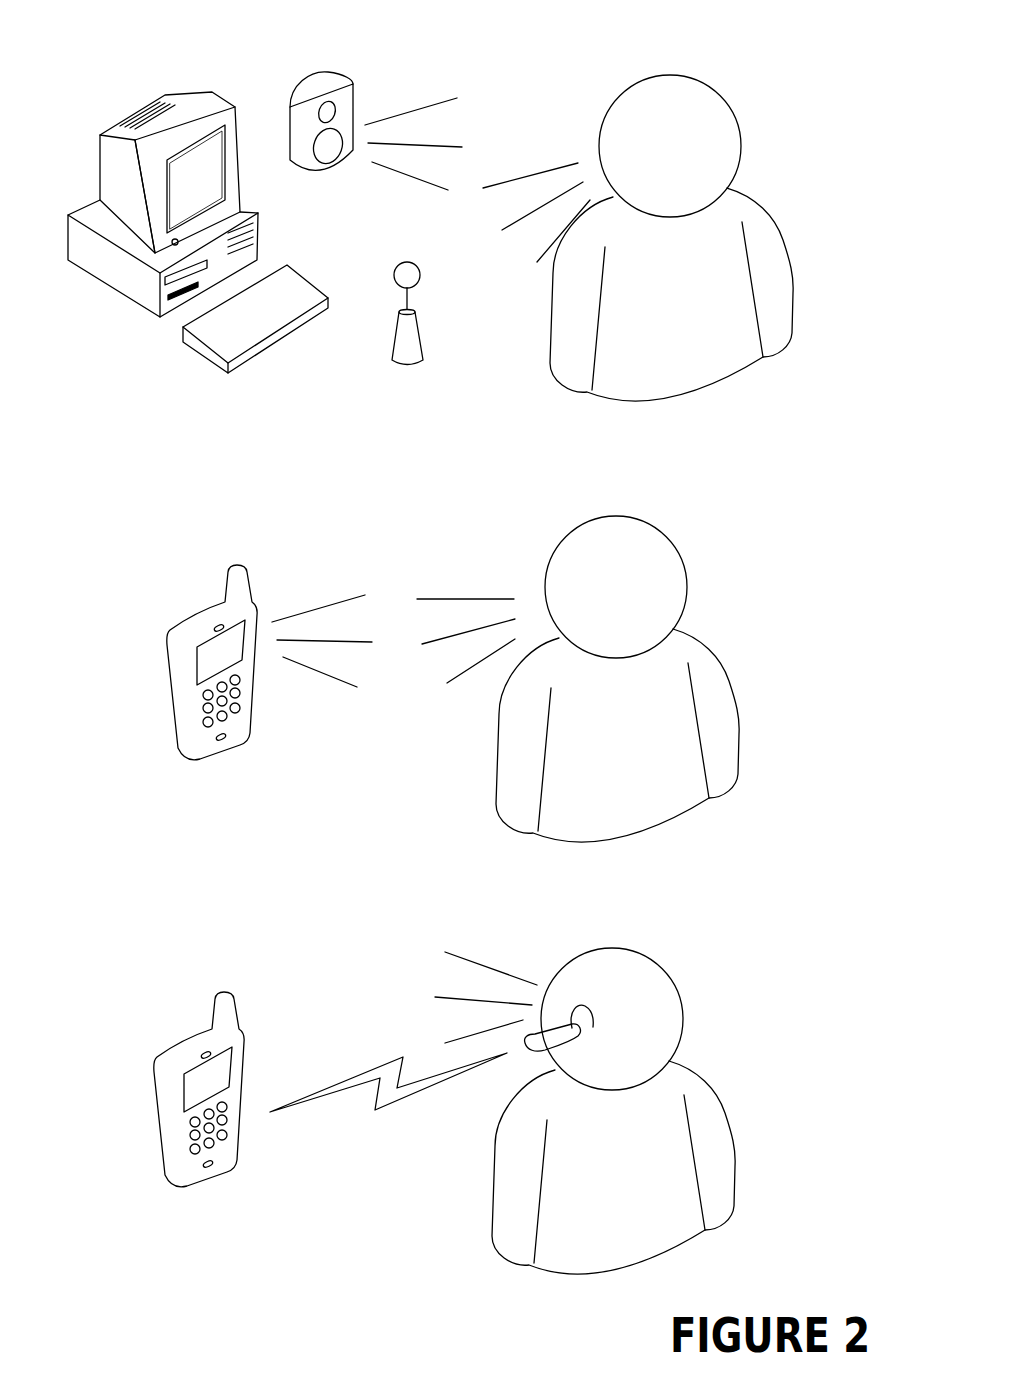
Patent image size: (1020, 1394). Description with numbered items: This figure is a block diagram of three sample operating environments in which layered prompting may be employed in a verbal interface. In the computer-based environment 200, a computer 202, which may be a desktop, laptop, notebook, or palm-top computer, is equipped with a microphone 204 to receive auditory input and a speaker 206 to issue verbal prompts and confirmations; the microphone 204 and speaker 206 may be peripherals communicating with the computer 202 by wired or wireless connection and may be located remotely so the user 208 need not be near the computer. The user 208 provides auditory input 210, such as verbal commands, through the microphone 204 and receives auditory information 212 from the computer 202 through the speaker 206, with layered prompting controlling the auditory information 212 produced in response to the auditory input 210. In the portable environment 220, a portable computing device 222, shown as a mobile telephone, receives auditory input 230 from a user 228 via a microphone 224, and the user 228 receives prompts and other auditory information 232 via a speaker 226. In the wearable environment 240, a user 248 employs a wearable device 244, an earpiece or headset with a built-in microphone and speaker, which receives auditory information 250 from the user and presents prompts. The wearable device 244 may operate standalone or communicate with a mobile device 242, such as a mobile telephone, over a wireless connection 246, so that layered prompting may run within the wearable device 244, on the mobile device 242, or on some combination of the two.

The computer-based environment 200 is at (778, 106).
The computer 202 is at (113, 124).
The microphone 204 is at (395, 315).
The speaker 206 is at (288, 128).
The user 208 is at (767, 213).
The auditory input 210 is at (543, 170).
The auditory information 212 is at (402, 110).
The portable environment 220 is at (823, 479).
The portable computing device 222 is at (170, 630).
The microphone 224 is at (227, 737).
The speaker 226 is at (217, 627).
The user 228 is at (734, 694).
The auditory input 230 is at (466, 598).
The auditory information 232 is at (305, 610).
The wearable environment 240 is at (819, 958).
The mobile device 242 is at (157, 1060).
The wearable device 244 is at (563, 1068).
The wireless connection 246 is at (363, 1068).
The user 248 is at (733, 1127).
The auditory information 250 is at (492, 968).